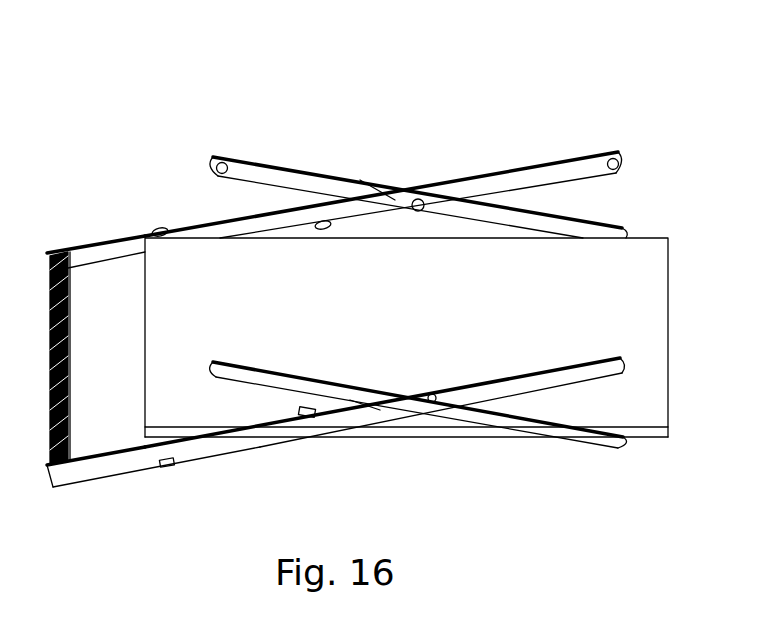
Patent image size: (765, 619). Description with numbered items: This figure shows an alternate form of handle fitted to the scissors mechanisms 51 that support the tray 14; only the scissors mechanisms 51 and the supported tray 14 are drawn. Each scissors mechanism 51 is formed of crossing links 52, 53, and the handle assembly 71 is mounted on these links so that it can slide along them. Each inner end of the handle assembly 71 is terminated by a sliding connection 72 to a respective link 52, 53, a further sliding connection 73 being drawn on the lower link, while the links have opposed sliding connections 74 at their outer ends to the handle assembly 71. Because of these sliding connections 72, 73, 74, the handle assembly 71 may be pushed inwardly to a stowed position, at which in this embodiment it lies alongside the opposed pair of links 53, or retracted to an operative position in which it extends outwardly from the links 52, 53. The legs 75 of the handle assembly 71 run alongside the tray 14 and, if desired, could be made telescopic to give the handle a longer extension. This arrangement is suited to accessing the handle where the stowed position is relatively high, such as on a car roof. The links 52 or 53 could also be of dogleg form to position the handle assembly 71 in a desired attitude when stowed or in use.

The tray 14 is at (406, 337).
The scissors mechanism 51 is at (420, 182).
The link 52 is at (373, 188).
The link 53 is at (580, 152).
The handle assembly 71 is at (86, 272).
The sliding connection 72 is at (348, 176).
The slider 73 is at (305, 418).
The sliding connection 74 is at (160, 228).
The leg 75 is at (118, 250).